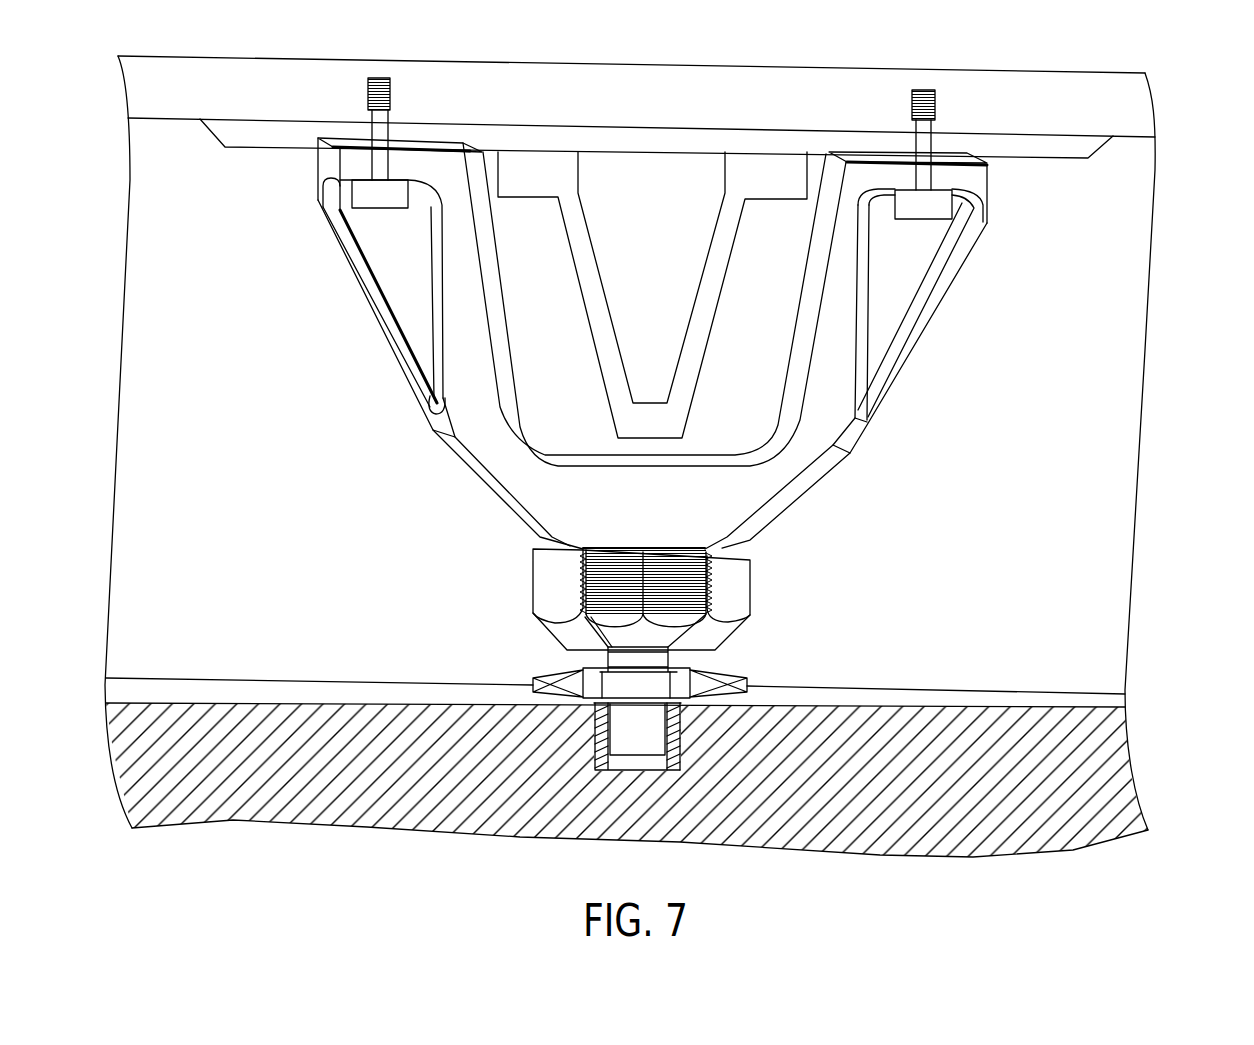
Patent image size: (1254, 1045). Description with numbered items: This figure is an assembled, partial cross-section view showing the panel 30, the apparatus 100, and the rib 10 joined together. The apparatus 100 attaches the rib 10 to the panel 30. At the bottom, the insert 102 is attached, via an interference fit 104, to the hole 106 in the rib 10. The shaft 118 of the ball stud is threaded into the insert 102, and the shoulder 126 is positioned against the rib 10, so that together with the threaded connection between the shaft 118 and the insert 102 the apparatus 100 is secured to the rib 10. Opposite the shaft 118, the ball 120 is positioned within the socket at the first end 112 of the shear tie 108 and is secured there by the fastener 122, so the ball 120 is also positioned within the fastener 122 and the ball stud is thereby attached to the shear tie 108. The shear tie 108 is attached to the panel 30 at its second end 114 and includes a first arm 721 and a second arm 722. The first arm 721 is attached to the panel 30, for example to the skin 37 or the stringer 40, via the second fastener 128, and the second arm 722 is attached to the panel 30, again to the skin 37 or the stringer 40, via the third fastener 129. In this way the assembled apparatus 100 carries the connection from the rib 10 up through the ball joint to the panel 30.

The panel 30 is at (1170, 82).
The skin 37 is at (165, 95).
The second end 114 is at (222, 167).
The first arm 721 is at (327, 164).
The second arm 722 is at (977, 175).
The second fastener 128 is at (382, 193).
The third fastener 129 is at (931, 208).
The shear tie 108 is at (938, 288).
The stringer 40 is at (702, 291).
The apparatus 100 is at (264, 458).
The first end 112 is at (661, 623).
The fastener 122 is at (542, 582).
The ball 120 is at (664, 631).
The shoulder 126 is at (540, 676).
The interference fit 104 is at (748, 704).
The rib 10 is at (330, 677).
The hole 106 is at (604, 778).
The shaft 118 is at (648, 748).
The insert 102 is at (672, 752).